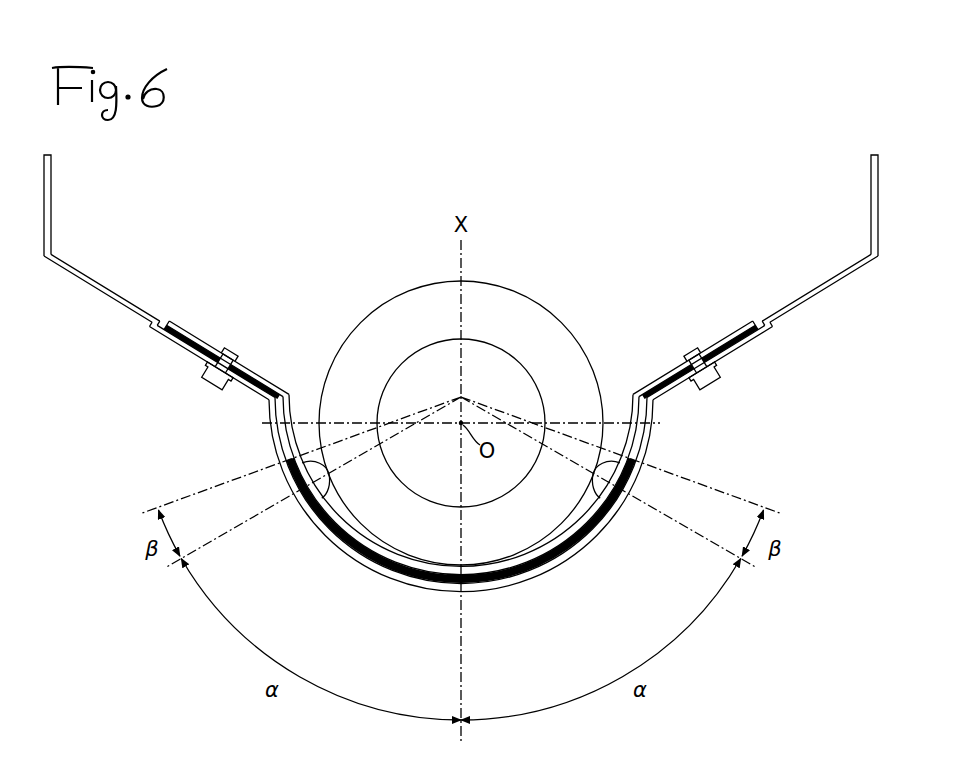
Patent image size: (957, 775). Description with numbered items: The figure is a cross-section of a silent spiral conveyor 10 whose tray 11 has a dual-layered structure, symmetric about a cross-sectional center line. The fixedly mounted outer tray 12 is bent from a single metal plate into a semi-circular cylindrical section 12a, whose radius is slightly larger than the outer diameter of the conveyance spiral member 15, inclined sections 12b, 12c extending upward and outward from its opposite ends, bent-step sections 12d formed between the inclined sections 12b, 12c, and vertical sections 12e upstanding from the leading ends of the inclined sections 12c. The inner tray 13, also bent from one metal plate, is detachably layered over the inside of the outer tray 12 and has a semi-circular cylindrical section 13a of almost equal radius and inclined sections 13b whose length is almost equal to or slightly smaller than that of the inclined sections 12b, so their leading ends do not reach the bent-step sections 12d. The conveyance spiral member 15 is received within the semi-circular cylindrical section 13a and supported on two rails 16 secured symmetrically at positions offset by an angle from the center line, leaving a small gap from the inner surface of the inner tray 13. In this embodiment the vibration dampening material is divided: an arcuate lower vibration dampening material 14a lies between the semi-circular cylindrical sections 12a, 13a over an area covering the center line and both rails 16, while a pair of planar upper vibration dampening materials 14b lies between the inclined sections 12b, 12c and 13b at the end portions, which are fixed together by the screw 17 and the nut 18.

The spiral conveyor 10 is at (176, 456).
The tray 11 is at (627, 643).
The outer tray 12 is at (528, 580).
The semi-circular cylindrical section 12a is at (377, 573).
The inclined section 12b is at (187, 352).
The inclined section 12c is at (90, 290).
The bent-step section 12d is at (140, 326).
The vertical section 12e is at (52, 188).
The inner tray 13 is at (586, 548).
The semi-circular cylindrical section 13a is at (291, 414).
The inclined section 13b is at (180, 327).
The arcuate lower vibration dampening material 14a is at (428, 579).
The planar upper vibration dampening material 14b is at (200, 348).
The conveyance spiral member 15 is at (513, 303).
The rail 16 is at (308, 500).
The screw 17 is at (228, 356).
The nut 18 is at (221, 392).